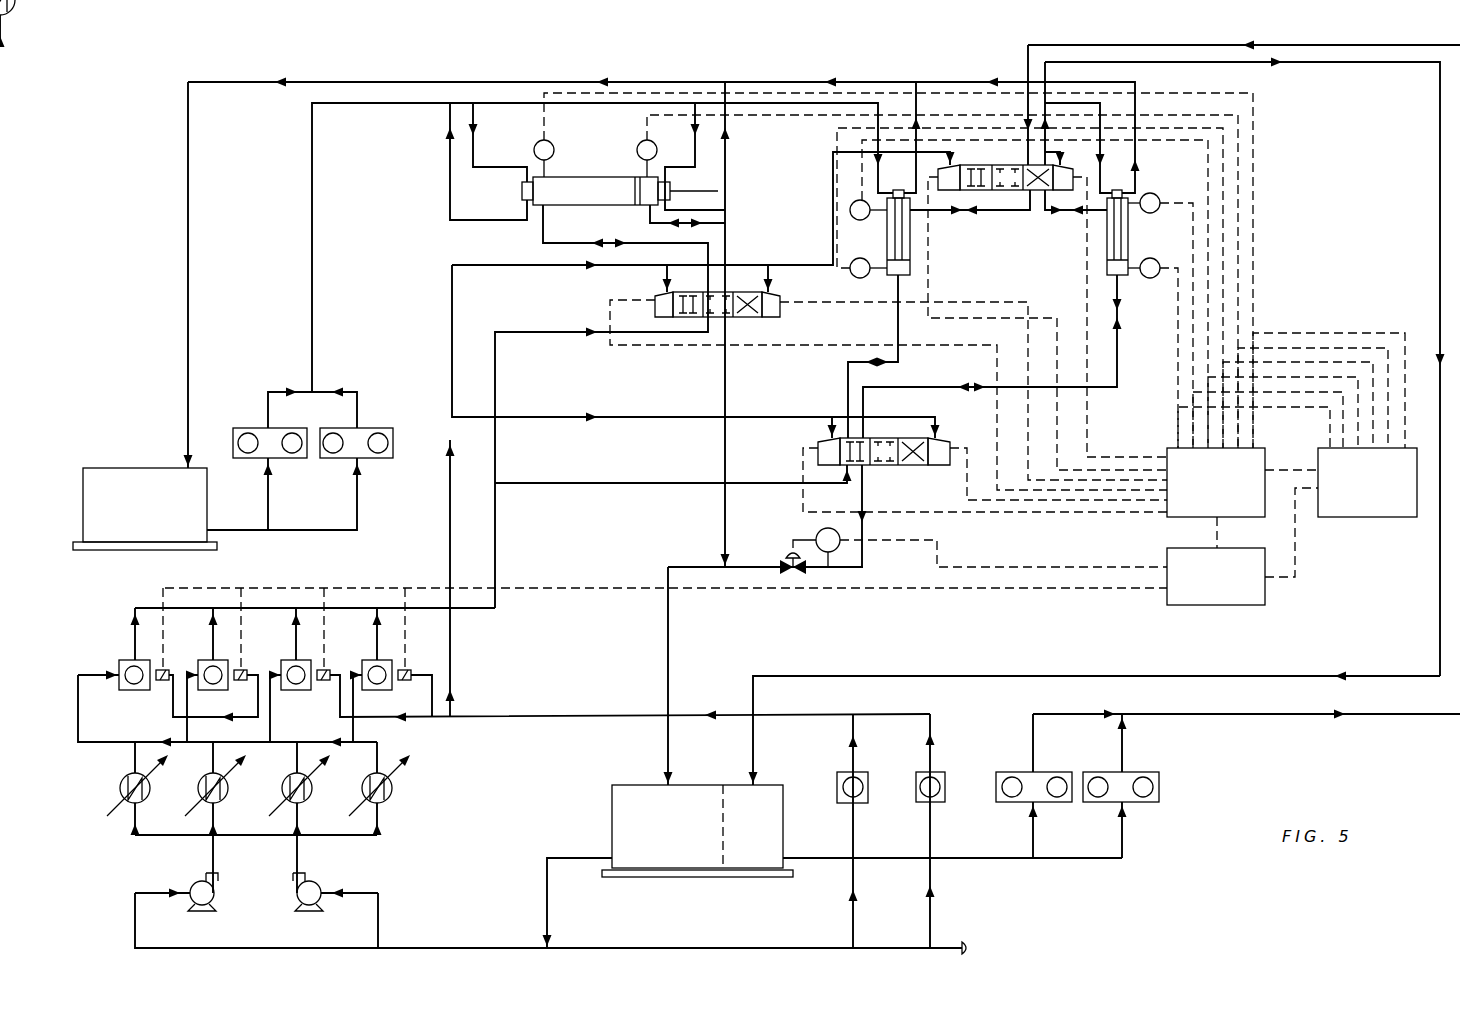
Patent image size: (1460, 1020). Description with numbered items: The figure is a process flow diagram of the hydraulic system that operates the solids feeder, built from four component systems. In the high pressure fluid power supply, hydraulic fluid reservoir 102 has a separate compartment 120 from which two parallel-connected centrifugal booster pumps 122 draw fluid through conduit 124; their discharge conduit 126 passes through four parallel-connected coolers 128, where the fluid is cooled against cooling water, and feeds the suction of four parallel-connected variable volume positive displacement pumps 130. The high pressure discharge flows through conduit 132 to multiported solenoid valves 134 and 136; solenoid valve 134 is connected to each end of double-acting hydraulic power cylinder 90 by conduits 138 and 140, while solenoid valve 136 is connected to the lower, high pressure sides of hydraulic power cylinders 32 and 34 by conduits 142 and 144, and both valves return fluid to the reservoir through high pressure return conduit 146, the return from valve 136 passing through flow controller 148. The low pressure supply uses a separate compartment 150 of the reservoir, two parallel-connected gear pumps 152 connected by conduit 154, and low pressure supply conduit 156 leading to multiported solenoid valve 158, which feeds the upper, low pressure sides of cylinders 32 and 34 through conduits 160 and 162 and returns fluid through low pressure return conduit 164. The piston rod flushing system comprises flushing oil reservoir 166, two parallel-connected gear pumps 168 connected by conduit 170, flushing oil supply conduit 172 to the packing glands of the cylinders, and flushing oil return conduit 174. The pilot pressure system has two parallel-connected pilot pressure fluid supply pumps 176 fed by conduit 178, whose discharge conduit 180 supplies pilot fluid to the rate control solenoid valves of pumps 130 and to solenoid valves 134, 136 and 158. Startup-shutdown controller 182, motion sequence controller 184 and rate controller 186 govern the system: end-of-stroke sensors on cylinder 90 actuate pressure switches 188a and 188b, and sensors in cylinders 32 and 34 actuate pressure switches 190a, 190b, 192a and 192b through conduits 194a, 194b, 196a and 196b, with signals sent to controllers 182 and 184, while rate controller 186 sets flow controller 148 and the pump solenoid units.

The hydraulic power cylinder 32 is at (887, 240).
The hydraulic power cylinder 34 is at (1128, 238).
The double-acting hydraulic power cylinder 90 is at (583, 176).
The hydraulic fluid reservoir 102 is at (690, 785).
The separate compartment 120 is at (665, 822).
The centrifugal booster pumps 122 is at (305, 912).
The conduit 124 is at (547, 910).
The discharge conduit 126 is at (252, 838).
The coolers 128 is at (420, 788).
The variable volume positive displacement pumps 130 is at (125, 659).
The conduit 132 is at (495, 520).
The solenoid valve 134 is at (752, 316).
The solenoid valve 136 is at (900, 466).
The conduit 138 is at (540, 235).
The conduit 140 is at (648, 214).
The conduit 142 is at (898, 330).
The conduit 144 is at (1117, 350).
The high pressure hydraulic fluid return conduit 146 is at (668, 632).
The flow controller 148 is at (817, 534).
The separate compartment 150 is at (753, 822).
The gear pumps 152 is at (1018, 803).
The conduit 154 is at (990, 858).
The low pressure fluid supply conduit 156 is at (1318, 714).
The solenoid valve 158 is at (998, 192).
The conduit 160 is at (948, 212).
The conduit 162 is at (1068, 212).
The low pressure fluid return conduit 164 is at (960, 676).
The flushing oil reservoir 166 is at (105, 467).
The gear pumps 168 is at (248, 426).
The conduit 170 is at (248, 531).
The flushing oil supply conduit 172 is at (312, 250).
The flushing oil return conduit 174 is at (188, 212).
The pilot pressure fluid supply pumps 176 is at (878, 750).
The conduit 178 is at (775, 948).
The conduit 180 is at (562, 716).
The startup-shutdown controller 182 is at (1352, 518).
The motion sequence controller 184 is at (1172, 518).
The rate controller 186 is at (1192, 606).
The pressure switch 188a is at (537, 143).
The pressure switch 188b is at (640, 142).
The pressure switch 190a is at (848, 211).
The pressure switch 190b is at (851, 274).
The pressure switch 192a is at (1156, 195).
The pressure switch 192b is at (1160, 263).
The conduit 194a is at (878, 203).
The conduit 194b is at (876, 274).
The conduit 196a is at (1140, 210).
The conduit 196b is at (1128, 282).